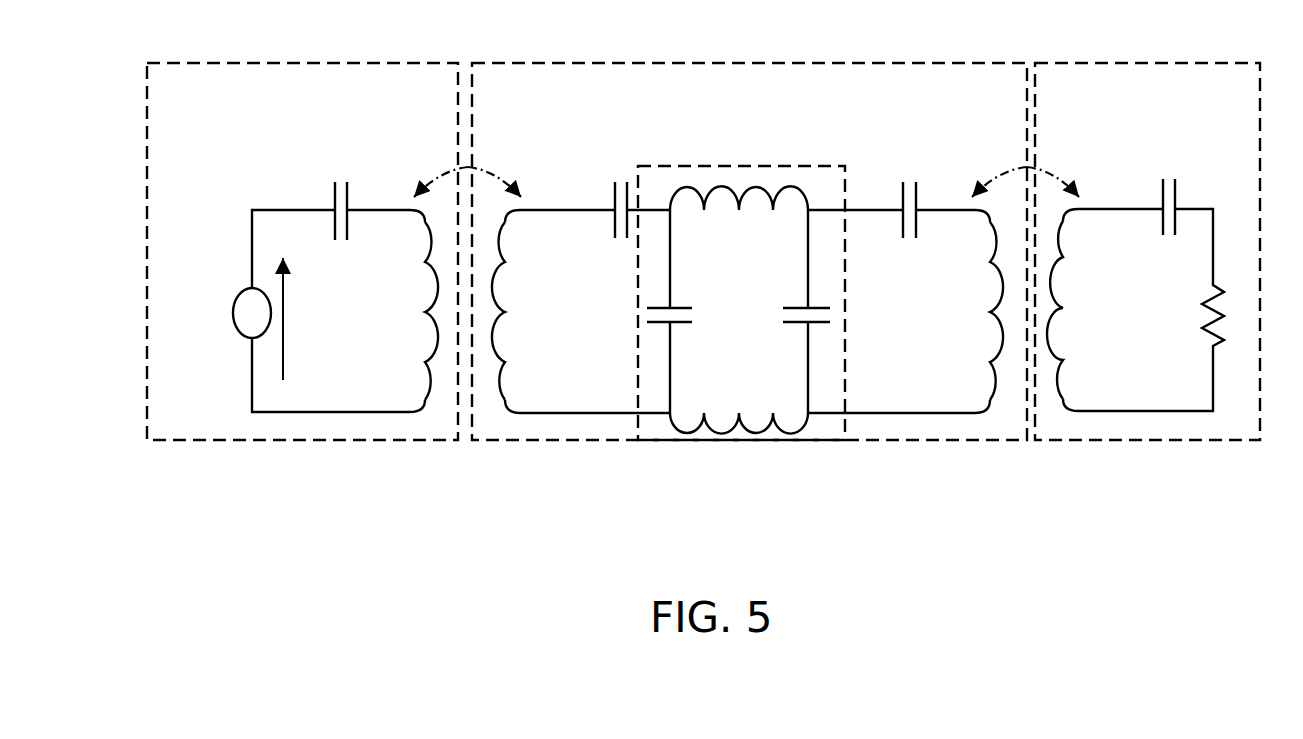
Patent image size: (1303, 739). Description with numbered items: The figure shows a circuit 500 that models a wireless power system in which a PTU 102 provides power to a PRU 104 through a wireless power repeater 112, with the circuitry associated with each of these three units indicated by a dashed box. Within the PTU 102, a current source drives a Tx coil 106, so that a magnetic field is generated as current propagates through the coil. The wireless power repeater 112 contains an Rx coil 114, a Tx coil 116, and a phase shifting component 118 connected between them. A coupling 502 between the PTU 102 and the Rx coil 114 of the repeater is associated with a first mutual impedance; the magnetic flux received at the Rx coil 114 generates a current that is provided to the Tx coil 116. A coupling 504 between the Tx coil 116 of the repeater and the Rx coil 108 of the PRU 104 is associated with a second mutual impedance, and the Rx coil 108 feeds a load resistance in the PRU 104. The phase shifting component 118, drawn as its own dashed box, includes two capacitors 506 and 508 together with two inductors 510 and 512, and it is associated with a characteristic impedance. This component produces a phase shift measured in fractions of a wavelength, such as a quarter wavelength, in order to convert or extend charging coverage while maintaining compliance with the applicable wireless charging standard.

The circuit 500 is at (730, 576).
The PTU 102 is at (262, 63).
The PRU 104 is at (1153, 63).
The wireless power repeater 112 is at (643, 63).
The phase shifting component 118 is at (793, 166).
The Tx coil 106 is at (432, 365).
The Rx coil 108 is at (1055, 365).
The Rx coil 114 is at (519, 322).
The Tx coil 116 is at (984, 328).
The coupling 502 is at (468, 167).
The coupling 504 is at (1027, 167).
The capacitor 506 is at (660, 305).
The capacitor 508 is at (820, 305).
The inductor 510 is at (688, 186).
The inductor 512 is at (722, 436).